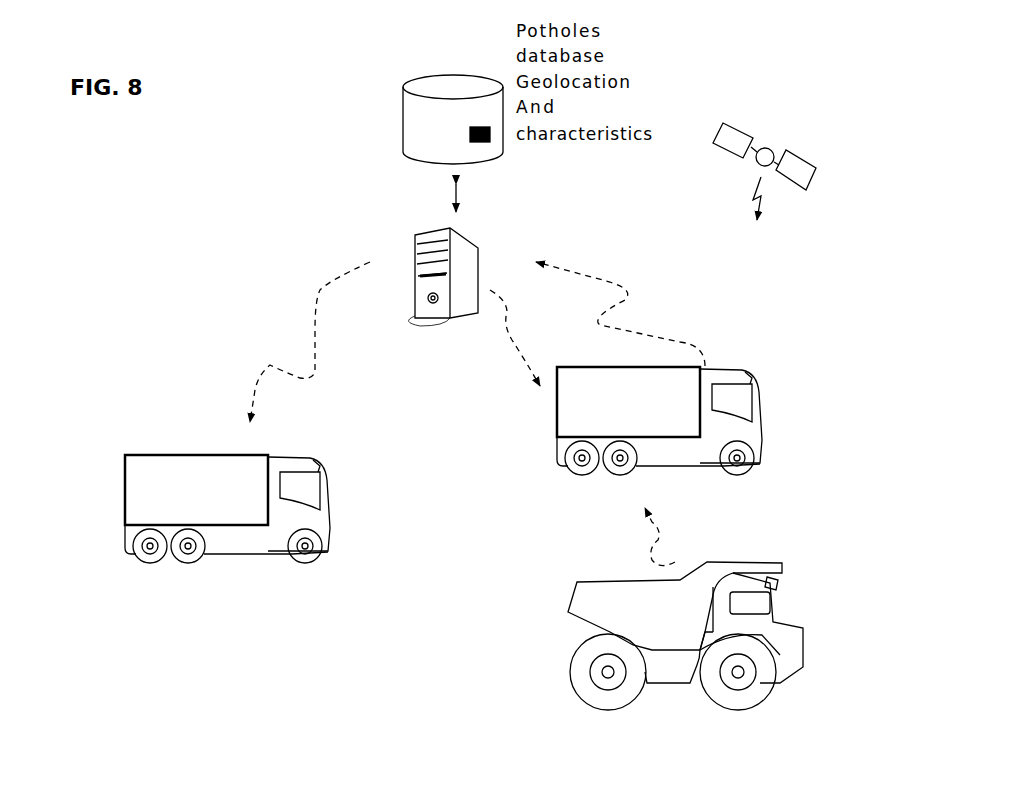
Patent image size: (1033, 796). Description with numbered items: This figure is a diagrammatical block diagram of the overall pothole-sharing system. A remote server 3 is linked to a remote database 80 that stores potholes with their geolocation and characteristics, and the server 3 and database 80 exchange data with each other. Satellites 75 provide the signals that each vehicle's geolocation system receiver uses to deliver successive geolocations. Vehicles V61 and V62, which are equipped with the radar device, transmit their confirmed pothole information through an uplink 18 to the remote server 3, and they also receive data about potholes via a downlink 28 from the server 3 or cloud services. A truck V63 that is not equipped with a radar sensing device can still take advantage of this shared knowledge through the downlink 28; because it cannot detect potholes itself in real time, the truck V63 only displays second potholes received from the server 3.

The remote database 80 is at (442, 76).
The remote server 3 is at (425, 232).
The satellites 75 is at (790, 134).
The downlink 28 is at (315, 330).
The uplink 18 is at (675, 338).
The vehicle V62 is at (543, 431).
The truck V63 is at (178, 514).
The vehicle V61 is at (560, 603).